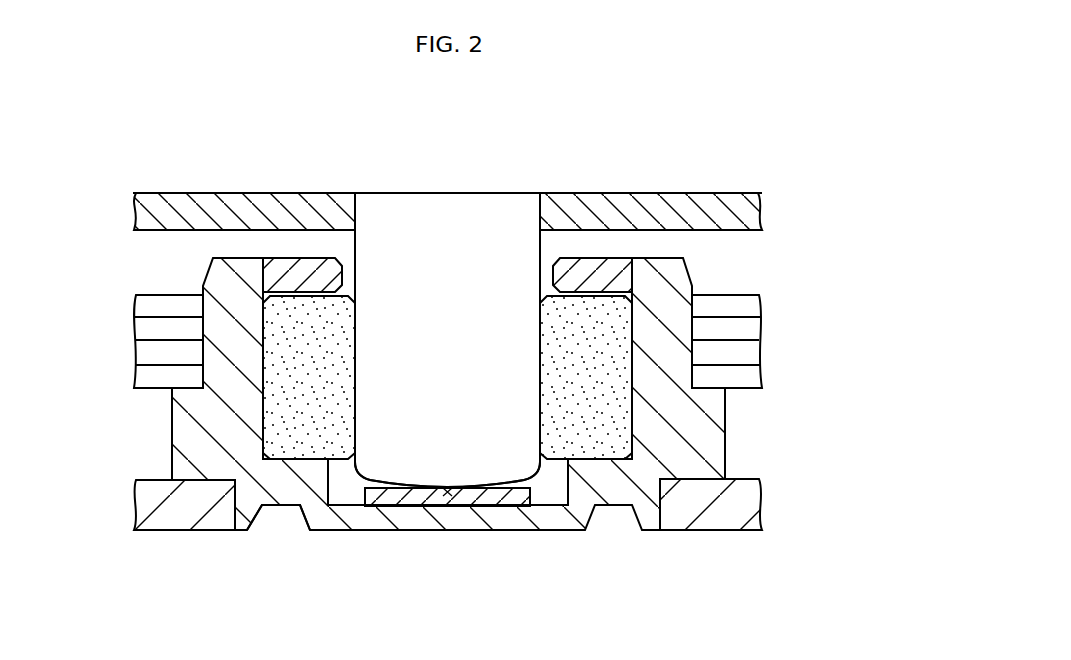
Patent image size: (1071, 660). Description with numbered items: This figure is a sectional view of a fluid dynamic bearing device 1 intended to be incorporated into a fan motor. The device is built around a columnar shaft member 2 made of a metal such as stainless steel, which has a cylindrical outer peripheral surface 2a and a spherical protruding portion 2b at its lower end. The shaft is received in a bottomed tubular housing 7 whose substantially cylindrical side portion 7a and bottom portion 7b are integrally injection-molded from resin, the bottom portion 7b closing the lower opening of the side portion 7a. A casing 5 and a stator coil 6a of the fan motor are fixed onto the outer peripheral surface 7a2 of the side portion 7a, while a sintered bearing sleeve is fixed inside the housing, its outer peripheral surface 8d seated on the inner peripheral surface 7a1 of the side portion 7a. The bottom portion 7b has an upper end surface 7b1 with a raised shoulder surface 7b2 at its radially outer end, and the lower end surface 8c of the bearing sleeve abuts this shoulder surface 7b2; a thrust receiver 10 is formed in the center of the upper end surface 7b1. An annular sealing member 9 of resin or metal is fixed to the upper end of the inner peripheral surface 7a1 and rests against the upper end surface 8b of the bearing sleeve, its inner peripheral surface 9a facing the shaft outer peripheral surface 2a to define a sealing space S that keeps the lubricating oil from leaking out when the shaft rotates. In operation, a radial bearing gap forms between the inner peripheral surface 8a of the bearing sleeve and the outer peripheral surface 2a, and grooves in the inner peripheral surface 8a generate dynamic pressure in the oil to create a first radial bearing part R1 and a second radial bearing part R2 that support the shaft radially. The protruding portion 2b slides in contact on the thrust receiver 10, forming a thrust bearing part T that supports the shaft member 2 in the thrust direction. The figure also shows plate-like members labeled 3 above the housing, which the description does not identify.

The fluid dynamic bearing device 1 is at (587, 168).
The shaft member 2 is at (468, 213).
The outer peripheral surface 2a is at (541, 383).
The protruding portion 2b is at (375, 478).
The upper plate 3 is at (206, 205).
The casing 5 is at (170, 513).
The stator coil 6a is at (163, 302).
The housing 7 is at (726, 455).
The side portion 7a is at (187, 443).
The inner peripheral surface 7a1 is at (263, 362).
The outer peripheral surface 7a2 is at (172, 418).
The bottom portion 7b is at (508, 517).
The upper end surface 7b1 is at (343, 506).
The shoulder surface 7b2 is at (296, 459).
The inner peripheral surface 8a is at (357, 345).
The upper end surface 8b is at (295, 290).
The lower end surface 8c is at (593, 460).
The outer peripheral surface 8d is at (633, 343).
The sealing member 9 is at (447, 219).
The inner peripheral surface 9a is at (553, 277).
The thrust receiver 10 is at (415, 497).
The first radial bearing part R1 is at (541, 325).
The second radial bearing part R2 is at (541, 428).
The sealing space S is at (346, 257).
The thrust bearing part T is at (448, 489).